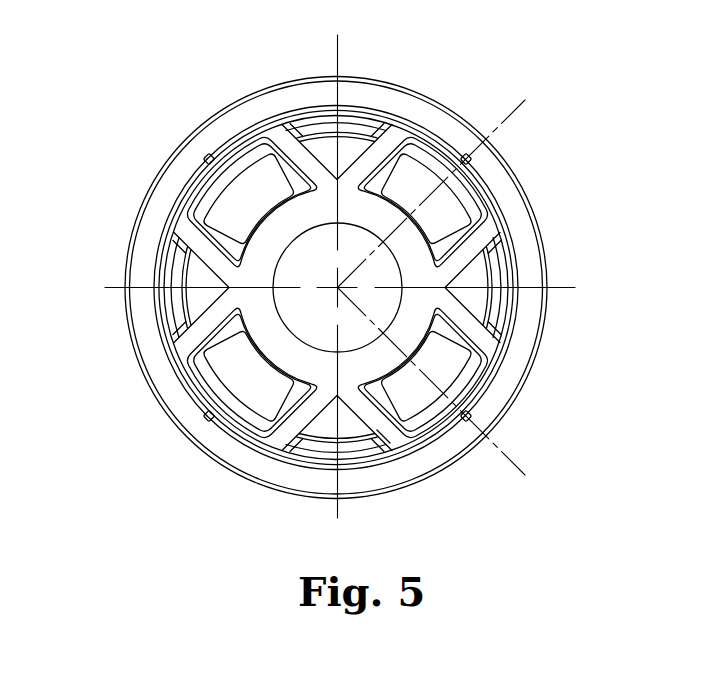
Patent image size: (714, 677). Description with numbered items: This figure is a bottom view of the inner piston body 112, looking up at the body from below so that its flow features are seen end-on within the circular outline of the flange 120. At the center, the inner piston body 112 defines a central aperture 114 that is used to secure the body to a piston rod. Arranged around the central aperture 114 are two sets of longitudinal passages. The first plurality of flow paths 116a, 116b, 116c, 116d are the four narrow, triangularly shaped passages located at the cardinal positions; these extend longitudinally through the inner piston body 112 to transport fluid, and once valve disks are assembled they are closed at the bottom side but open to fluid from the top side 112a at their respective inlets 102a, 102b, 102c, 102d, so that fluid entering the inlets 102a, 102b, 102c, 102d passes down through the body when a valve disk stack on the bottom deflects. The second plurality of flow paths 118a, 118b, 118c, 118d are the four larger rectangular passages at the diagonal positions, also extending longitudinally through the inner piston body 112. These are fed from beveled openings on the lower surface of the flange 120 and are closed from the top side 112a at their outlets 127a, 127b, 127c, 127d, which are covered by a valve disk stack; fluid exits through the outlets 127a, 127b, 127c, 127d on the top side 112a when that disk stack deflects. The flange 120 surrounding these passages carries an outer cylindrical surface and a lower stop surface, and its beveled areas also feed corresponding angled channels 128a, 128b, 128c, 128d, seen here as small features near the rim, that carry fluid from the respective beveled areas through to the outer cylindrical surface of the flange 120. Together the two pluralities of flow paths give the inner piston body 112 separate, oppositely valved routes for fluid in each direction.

The inner piston body 112 is at (117, 100).
The top side 112a is at (398, 443).
The central aperture 114 is at (305, 232).
The flow path 116a is at (482, 272).
The flow path 116b is at (323, 423).
The flow path 116c is at (193, 300).
The flow path 116d is at (347, 153).
The valve flow path 118a is at (426, 197).
The valve flow path 118b is at (426, 376).
The valve flow path 118c is at (247, 376).
The valve flow path 118d is at (247, 197).
The flange 120 is at (548, 222).
The inlet 102a is at (512, 300).
The inlet 102b is at (373, 463).
The inlet 102c is at (157, 255).
The inlet 102d is at (303, 105).
The outlet 127a is at (427, 140).
The outlet 127b is at (513, 376).
The outlet 127c is at (243, 440).
The outlet 127d is at (177, 185).
The angled channel 128a is at (470, 158).
The angled channel 128b is at (470, 415).
The angled channel 128c is at (207, 419).
The angled channel 128d is at (205, 157).